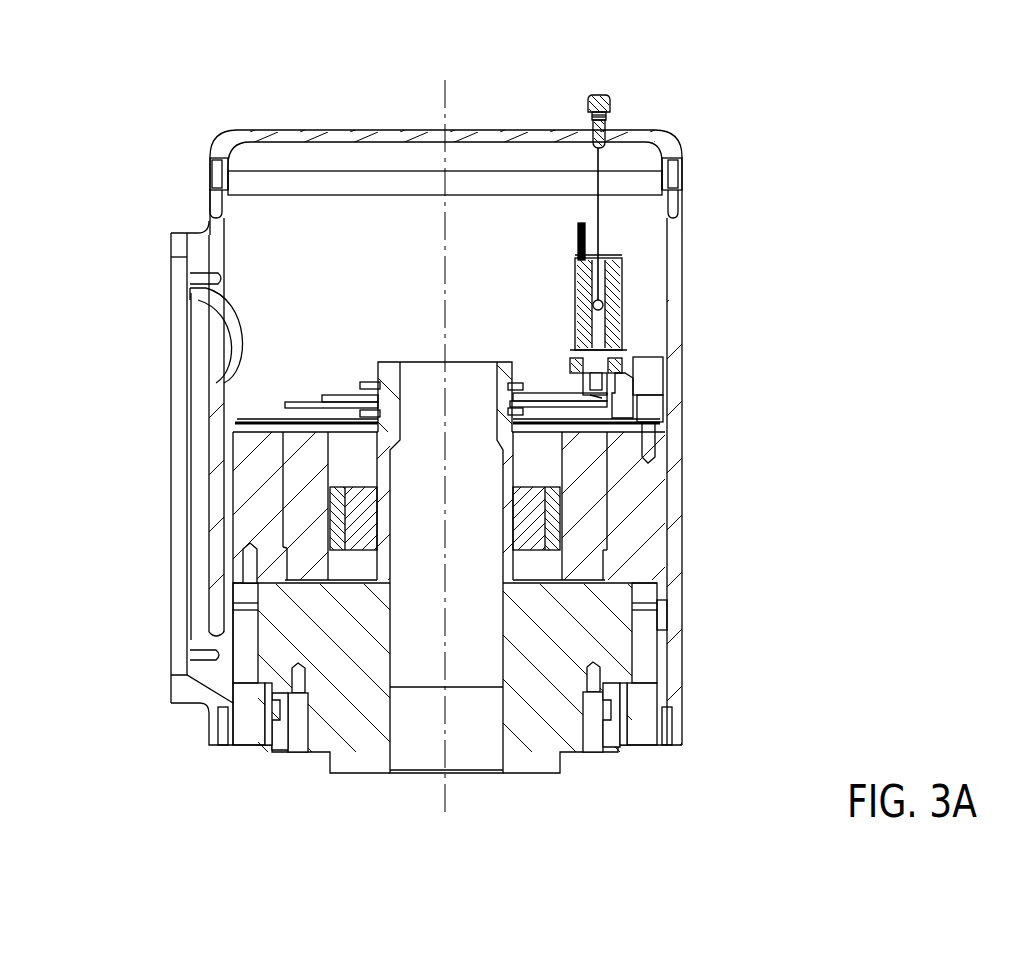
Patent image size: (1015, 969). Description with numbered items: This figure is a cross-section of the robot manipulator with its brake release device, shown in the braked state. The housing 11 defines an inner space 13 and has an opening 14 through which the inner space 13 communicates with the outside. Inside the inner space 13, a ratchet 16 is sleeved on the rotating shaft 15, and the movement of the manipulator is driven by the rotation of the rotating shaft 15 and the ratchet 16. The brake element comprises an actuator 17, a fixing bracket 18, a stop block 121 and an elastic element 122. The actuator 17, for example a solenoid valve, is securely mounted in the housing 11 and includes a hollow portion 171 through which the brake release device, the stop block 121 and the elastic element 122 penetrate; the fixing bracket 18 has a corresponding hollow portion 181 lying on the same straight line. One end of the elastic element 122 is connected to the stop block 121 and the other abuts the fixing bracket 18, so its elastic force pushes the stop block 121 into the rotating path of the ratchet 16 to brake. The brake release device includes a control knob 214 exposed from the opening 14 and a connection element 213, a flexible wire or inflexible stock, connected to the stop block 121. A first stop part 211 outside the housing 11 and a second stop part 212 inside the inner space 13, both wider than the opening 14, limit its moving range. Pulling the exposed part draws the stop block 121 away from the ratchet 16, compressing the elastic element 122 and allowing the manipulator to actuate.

The housing 11 is at (249, 135).
The inner space 13 is at (242, 228).
The rotating shaft 15 is at (377, 363).
The opening 14 is at (649, 96).
The first stop part 211 is at (603, 95).
The control knob 214 is at (607, 118).
The second stop part 212 is at (607, 147).
The connection element 213 is at (600, 240).
The hollow portion 181 is at (607, 257).
The actuator 17 is at (713, 294).
The hollow portion 171 is at (605, 307).
The elastic element 122 is at (622, 350).
The stop block 121 is at (605, 386).
The ratchet 16 is at (600, 458).
The fixing bracket 18 is at (572, 362).